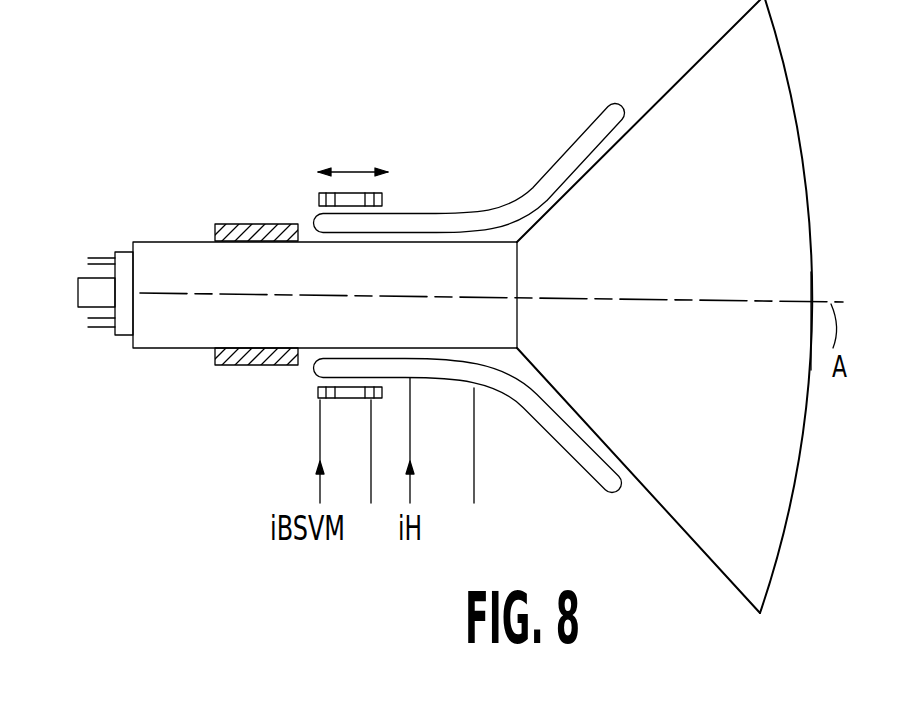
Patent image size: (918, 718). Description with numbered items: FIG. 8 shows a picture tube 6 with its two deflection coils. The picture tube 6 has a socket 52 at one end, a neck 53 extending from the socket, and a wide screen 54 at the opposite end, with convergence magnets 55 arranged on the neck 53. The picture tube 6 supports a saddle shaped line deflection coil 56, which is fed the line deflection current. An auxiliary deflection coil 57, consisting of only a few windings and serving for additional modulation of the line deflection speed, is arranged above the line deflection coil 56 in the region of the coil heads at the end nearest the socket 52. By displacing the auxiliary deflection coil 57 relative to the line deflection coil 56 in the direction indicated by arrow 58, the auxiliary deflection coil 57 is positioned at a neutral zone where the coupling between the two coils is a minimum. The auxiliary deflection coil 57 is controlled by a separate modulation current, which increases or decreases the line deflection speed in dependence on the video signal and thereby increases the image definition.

The picture tube 6 is at (700, 50).
The socket 52 is at (75, 296).
The neck 53 is at (193, 334).
The screen 54 is at (807, 183).
The convergence magnets 55 is at (245, 223).
The line deflection coil 56 is at (558, 156).
The auxiliary deflection coil 57 is at (318, 199).
The arrow 58 is at (349, 169).